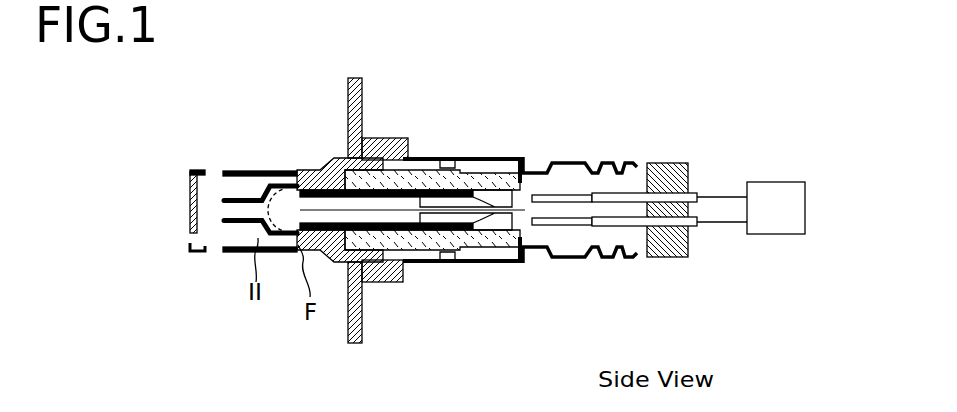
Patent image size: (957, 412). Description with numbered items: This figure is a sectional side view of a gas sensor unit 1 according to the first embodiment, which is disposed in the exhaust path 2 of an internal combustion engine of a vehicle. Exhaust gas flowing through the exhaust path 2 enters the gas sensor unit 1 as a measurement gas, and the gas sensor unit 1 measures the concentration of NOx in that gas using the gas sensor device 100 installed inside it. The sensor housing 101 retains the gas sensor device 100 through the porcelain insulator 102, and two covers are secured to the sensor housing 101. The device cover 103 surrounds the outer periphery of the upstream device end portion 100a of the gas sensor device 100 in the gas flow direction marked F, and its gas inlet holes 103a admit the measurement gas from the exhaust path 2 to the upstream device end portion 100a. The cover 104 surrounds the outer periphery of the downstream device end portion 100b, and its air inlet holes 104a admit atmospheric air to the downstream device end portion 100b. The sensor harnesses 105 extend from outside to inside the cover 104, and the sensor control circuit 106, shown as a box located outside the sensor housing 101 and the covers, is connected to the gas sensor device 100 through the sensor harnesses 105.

The gas sensor unit 1 is at (603, 113).
The exhaust path 2 is at (361, 90).
The gas sensor device 100 is at (318, 203).
The upstream device end portion 100a is at (292, 225).
The downstream device end portion 100b is at (494, 200).
The sensor housing 101 is at (385, 138).
The porcelain insulator 102 is at (492, 162).
The device cover 103 is at (200, 250).
The gas inlet holes 103a is at (190, 183).
The cover 104 is at (510, 263).
The air inlet holes 104a is at (643, 255).
The sensor harnesses 105 is at (710, 195).
The sensor control circuit 106 is at (787, 182).